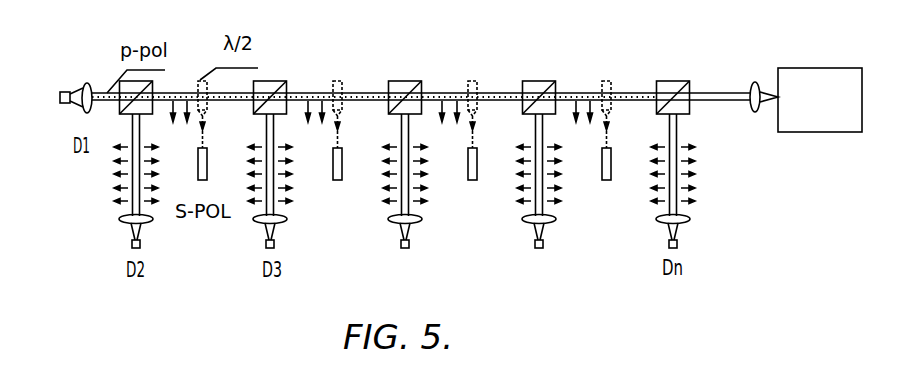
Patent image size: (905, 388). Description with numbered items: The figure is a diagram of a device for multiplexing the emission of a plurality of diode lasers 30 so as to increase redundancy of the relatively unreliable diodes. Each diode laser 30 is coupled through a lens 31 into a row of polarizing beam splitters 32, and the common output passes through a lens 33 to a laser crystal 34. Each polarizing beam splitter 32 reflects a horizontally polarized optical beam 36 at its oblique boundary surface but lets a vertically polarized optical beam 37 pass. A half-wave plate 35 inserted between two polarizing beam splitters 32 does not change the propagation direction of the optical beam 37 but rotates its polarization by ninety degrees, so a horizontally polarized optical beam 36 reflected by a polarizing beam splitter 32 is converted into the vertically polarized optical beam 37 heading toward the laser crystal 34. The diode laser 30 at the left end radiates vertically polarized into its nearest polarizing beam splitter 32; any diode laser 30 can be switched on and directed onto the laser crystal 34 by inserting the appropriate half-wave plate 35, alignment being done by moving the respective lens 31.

The diode laser 30 is at (650, 253).
The lens 31 is at (701, 234).
The polarizing beam splitter 32 is at (681, 58).
The lens 33 is at (749, 83).
The laser crystal 34 is at (818, 68).
The half-wave plate 35 is at (602, 165).
The horizontally polarized optical beam 36 is at (660, 146).
The vertically polarized optical beam 37 is at (241, 148).